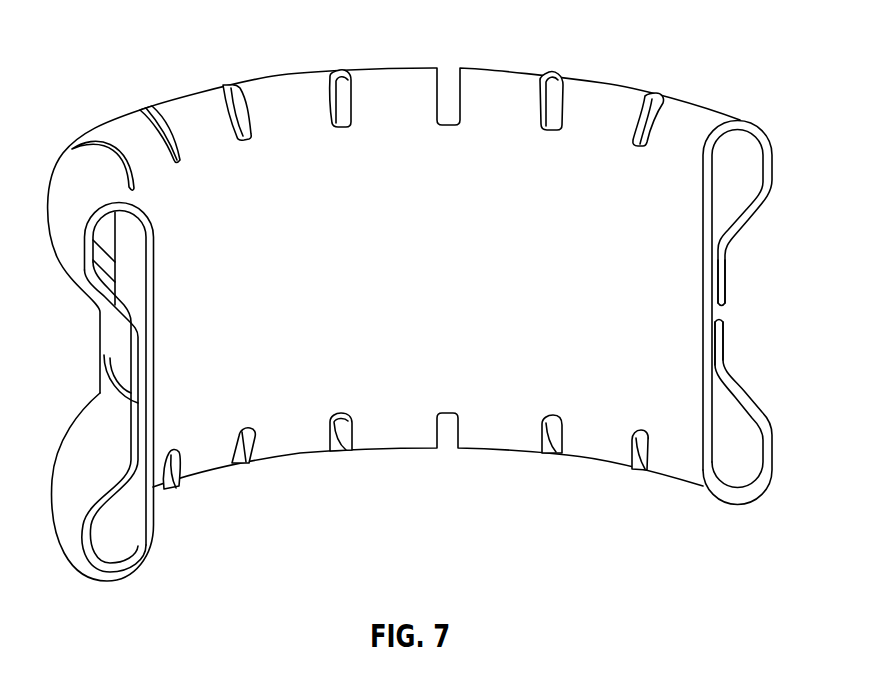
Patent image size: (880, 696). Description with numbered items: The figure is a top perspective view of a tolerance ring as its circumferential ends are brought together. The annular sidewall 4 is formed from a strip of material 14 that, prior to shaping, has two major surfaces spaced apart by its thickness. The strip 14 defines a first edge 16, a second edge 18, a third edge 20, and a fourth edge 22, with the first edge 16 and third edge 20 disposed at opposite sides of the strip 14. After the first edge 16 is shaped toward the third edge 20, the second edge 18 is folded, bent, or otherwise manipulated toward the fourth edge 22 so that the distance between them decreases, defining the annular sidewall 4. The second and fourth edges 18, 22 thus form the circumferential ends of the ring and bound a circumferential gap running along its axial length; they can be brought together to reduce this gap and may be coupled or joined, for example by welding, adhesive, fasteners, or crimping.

The sidewall 4 is at (423, 67).
The strip of material 14 is at (607, 88).
The first edge 16 is at (721, 303).
The second edge 18 is at (153, 431).
The third edge 20 is at (720, 321).
The fourth edge 22 is at (702, 331).